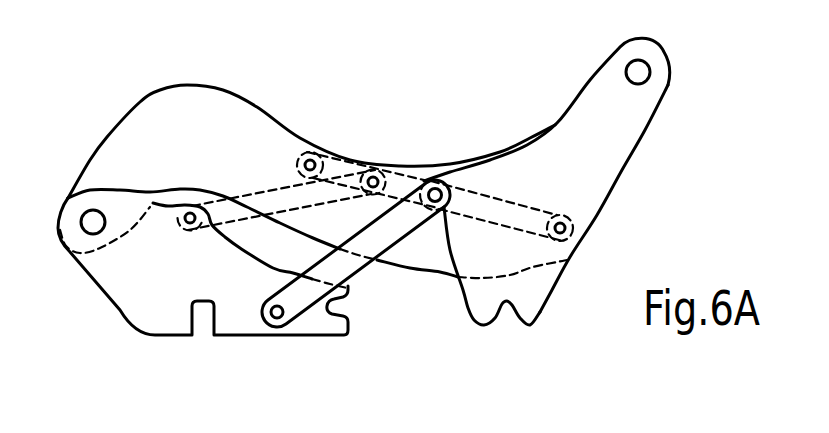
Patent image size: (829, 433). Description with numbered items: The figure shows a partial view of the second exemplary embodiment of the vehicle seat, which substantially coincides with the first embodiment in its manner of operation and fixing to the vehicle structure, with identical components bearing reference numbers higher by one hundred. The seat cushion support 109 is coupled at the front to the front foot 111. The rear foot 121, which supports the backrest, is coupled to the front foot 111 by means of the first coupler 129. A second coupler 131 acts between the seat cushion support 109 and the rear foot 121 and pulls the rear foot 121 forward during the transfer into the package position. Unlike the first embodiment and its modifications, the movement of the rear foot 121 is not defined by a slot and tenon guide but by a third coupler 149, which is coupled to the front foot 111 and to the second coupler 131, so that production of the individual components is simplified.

The seat cushion support 109 is at (250, 142).
The front foot 111 is at (143, 293).
The rear foot 121 is at (610, 128).
The first coupler 129 is at (343, 263).
The second coupler 131 is at (483, 207).
The third coupler 149 is at (217, 213).